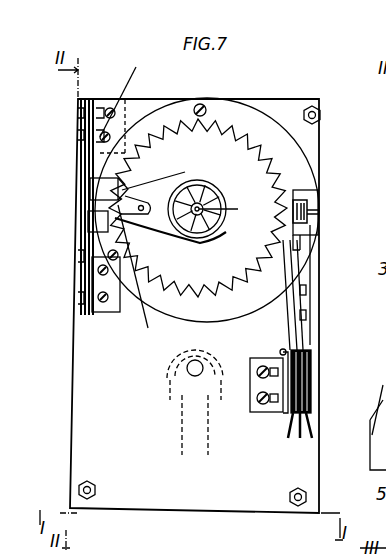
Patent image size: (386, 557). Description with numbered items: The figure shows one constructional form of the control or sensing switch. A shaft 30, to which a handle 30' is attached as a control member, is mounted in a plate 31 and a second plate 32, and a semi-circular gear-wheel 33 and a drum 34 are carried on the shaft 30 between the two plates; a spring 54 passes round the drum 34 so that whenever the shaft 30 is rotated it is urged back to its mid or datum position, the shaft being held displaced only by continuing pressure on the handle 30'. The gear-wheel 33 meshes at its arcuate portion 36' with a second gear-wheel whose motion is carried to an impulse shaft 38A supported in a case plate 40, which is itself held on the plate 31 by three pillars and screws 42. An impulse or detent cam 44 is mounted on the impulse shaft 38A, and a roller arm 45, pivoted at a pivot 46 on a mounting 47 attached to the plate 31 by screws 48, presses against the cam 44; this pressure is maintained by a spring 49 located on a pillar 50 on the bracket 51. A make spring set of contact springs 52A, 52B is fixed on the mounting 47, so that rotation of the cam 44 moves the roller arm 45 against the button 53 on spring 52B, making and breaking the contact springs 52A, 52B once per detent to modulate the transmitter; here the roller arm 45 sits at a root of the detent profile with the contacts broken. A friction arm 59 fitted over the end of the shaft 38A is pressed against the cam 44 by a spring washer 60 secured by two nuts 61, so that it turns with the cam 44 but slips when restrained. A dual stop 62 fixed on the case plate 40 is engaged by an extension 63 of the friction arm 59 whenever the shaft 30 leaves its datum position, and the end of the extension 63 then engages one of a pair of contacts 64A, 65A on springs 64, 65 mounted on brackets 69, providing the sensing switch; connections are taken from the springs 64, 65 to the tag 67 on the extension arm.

The case plate 40 is at (228, 100).
The screws 42 is at (201, 104).
The impulse or detent cam 44 is at (198, 208).
The roller arm 45 is at (288, 206).
The impulse shaft 38A is at (236, 209).
The friction arm 59 is at (152, 193).
The nuts 61 is at (189, 195).
The extension of the friction arm 63 is at (170, 242).
The spring washer 60 is at (205, 236).
The tag 67 is at (141, 214).
The dual stop 62 is at (119, 191).
The brackets 69 is at (104, 325).
The spring 64 is at (127, 91).
The contact 64A is at (148, 274).
The spring 65 is at (85, 310).
The contact 65A is at (103, 257).
The bracket 51 is at (310, 193).
The pillar 50 is at (319, 207).
The spring 49 is at (295, 222).
The button 53 is at (302, 250).
The contact spring 52A is at (306, 315).
The contact spring 52B is at (306, 290).
The pivot 46 is at (281, 350).
The screws 48 is at (268, 395).
The mounting 47 is at (282, 412).
The shaft 30 is at (179, 384).
The plate 31 is at (149, 438).
The handle 30' is at (216, 435).
The spring 54 is at (385, 341).
The drum 34 is at (385, 364).
The semi-circular gear-wheel 33 is at (380, 388).
The plate 32 is at (375, 412).
The member 36' is at (355, 474).